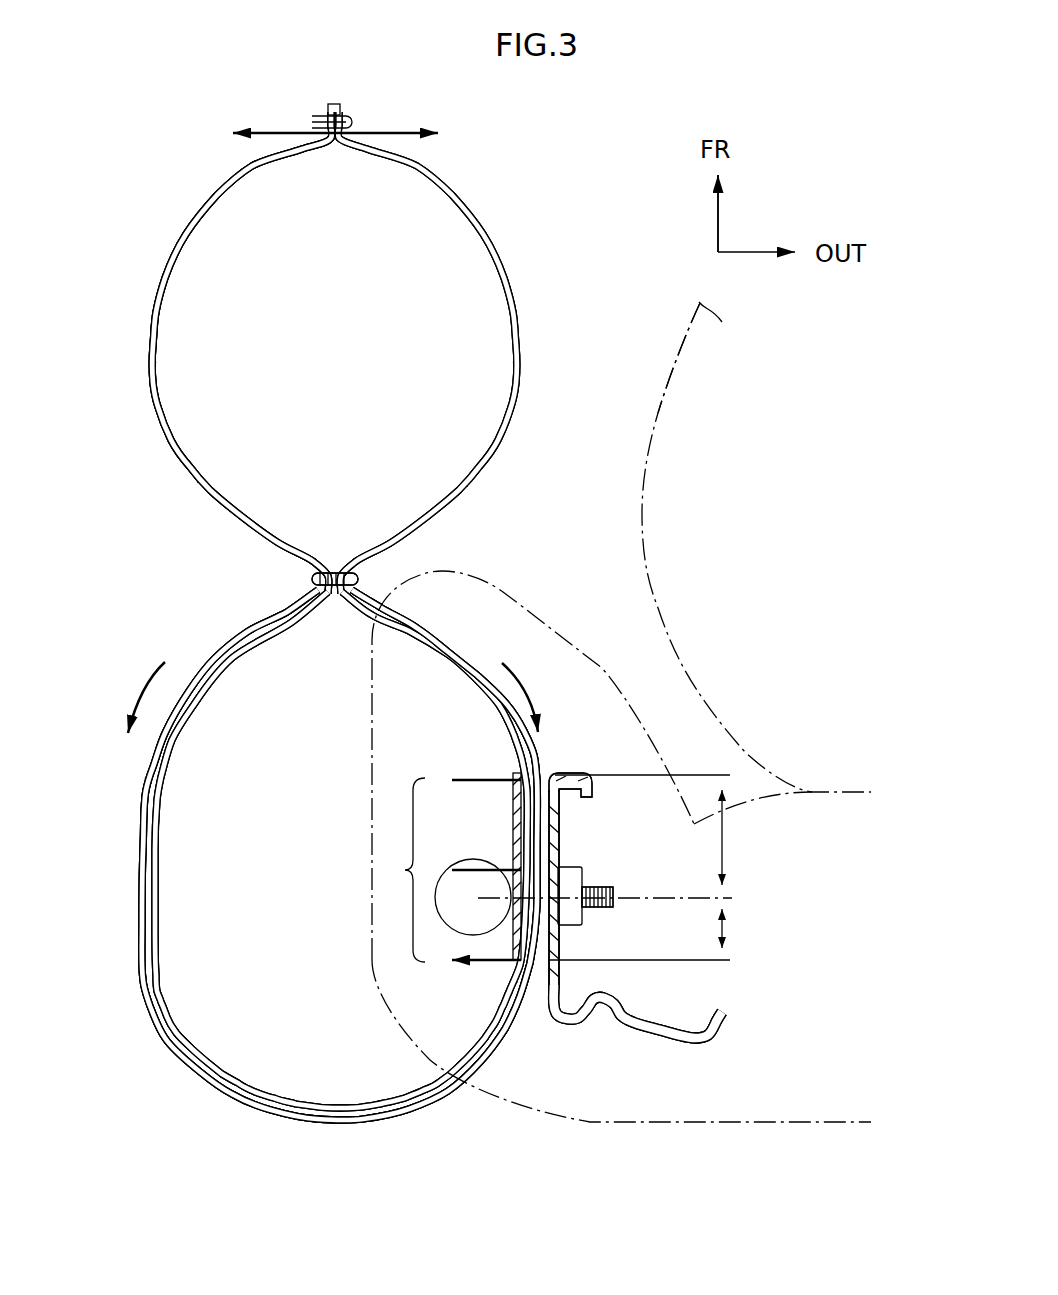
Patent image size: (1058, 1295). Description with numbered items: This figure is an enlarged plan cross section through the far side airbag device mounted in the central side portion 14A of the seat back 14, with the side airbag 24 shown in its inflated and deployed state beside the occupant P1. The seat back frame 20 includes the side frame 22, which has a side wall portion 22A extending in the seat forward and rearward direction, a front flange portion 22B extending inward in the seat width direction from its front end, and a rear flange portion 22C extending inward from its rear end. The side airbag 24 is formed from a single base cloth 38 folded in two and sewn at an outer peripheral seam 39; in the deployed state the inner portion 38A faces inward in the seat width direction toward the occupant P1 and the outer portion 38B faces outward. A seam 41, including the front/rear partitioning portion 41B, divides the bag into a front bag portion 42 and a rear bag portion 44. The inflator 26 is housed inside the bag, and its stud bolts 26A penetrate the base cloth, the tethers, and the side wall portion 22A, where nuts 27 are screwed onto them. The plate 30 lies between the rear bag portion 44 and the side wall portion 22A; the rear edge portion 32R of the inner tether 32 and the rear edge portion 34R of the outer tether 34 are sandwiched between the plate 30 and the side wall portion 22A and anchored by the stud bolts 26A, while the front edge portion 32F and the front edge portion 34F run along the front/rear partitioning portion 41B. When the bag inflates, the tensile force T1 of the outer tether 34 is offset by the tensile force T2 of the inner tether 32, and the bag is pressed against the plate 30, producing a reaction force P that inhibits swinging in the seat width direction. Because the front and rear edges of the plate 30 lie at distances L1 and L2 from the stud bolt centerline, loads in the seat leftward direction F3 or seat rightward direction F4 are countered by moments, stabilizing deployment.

The seat back 14 is at (825, 782).
The central side portion 14A is at (566, 630).
The seat back frame 20 is at (635, 914).
The side frame 22 is at (623, 1036).
The side wall portion 22A is at (560, 982).
The front flange portion 22B is at (560, 773).
The rear flange portion 22C is at (667, 1045).
The side airbag 24 is at (512, 220).
The inflator 26 is at (476, 938).
The stud bolts 26A is at (615, 897).
The nuts 27 is at (588, 875).
The plate 30 is at (512, 812).
The inner tether 32 is at (468, 657).
The front edge portion 32F is at (388, 562).
The rear edge portion 32R is at (538, 941).
The outer tether 34 is at (188, 1072).
The front edge portion 34F is at (283, 557).
The rear edge portion 34R is at (545, 848).
The base cloth 38 is at (527, 314).
The inner portion 38A is at (515, 447).
The outer portion 38B is at (175, 458).
The outer peripheral seam 39 is at (344, 105).
The seam 41 is at (335, 579).
The front/rear partitioning portion 41B is at (308, 579).
The front bag portion 42 is at (150, 323).
The rear bag portion 44 is at (165, 882).
The load in the seat leftward direction F3 is at (276, 130).
The load in the seat rightward direction F4 is at (399, 130).
The tensile force T1 is at (545, 685).
The tensile force T2 is at (148, 672).
The reaction force P is at (450, 870).
The occupant P1 is at (652, 405).
The distance L1 is at (730, 838).
The distance L2 is at (730, 930).